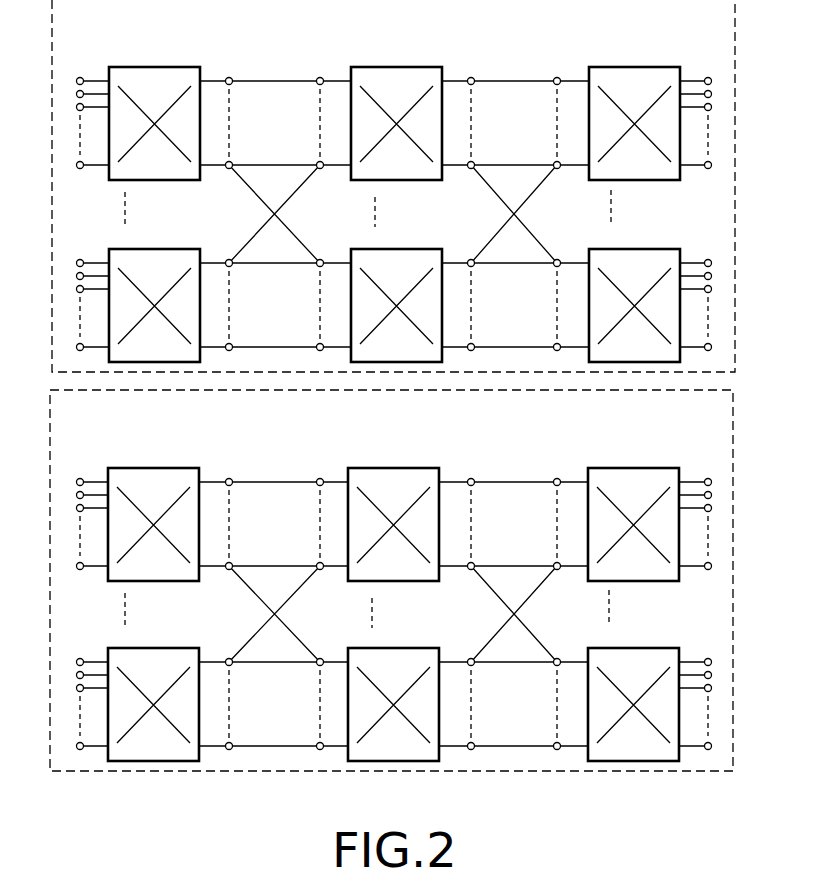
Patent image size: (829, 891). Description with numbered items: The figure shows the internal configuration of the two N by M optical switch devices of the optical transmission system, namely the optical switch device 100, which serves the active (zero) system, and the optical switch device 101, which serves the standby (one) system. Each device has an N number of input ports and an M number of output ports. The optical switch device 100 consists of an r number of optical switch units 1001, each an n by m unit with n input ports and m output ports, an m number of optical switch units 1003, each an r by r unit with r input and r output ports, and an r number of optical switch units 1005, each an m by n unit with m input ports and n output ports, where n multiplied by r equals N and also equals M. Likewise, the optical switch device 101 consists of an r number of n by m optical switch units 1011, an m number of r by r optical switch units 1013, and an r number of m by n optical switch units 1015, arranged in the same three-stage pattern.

The optical switch device 100 is at (735, 213).
The optical switch device 101 is at (733, 613).
The optical switch unit 1001 is at (154, 67).
The optical switch unit 1003 is at (409, 67).
The optical switch unit 1005 is at (641, 67).
The n by m optical switch unit 1011 is at (153, 468).
The r by r optical switch unit 1013 is at (406, 468).
The m by n optical switch unit 1015 is at (640, 468).